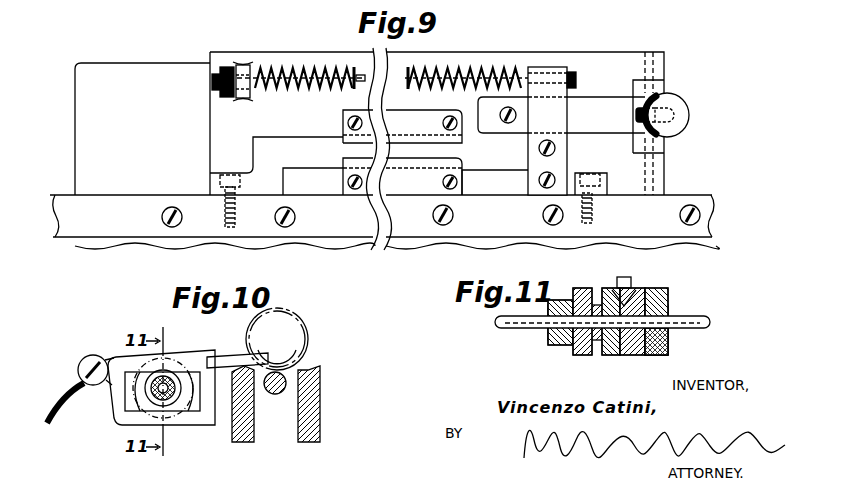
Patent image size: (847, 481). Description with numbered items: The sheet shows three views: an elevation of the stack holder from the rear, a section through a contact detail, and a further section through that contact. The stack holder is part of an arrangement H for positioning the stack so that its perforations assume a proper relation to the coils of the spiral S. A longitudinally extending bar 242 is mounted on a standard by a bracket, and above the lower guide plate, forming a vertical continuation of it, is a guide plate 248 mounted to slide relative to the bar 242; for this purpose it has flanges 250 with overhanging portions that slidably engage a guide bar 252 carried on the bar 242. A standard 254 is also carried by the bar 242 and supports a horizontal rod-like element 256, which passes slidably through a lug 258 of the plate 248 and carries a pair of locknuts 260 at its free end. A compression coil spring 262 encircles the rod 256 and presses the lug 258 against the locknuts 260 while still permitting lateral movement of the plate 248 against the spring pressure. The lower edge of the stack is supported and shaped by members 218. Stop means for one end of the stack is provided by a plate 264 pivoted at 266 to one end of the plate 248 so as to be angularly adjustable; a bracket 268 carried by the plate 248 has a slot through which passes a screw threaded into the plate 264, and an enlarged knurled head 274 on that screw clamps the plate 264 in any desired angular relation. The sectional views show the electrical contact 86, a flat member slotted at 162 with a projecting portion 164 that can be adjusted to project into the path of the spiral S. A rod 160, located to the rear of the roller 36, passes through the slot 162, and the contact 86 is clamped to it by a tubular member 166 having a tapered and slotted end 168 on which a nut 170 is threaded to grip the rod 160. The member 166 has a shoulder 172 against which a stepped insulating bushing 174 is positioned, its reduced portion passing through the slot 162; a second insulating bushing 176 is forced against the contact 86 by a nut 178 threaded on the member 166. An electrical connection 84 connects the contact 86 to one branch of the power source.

In FIG. 9, the arrangement H is at (101, 46).
In FIG. 9, the bar 242 is at (85, 225).
In FIG. 9, the guide plate 248 is at (352, 53).
In FIG. 9, the flanges 250 is at (343, 115).
In FIG. 9, the guide bar 252 is at (268, 148).
In FIG. 9, the standard 254 is at (532, 142).
In FIG. 9, the rod-like element 256 is at (300, 68).
In FIG. 9, the lug 258 is at (243, 66).
In FIG. 9, the locknuts 260 is at (220, 91).
In FIG. 9, the compression coil spring 262 is at (356, 70).
In FIG. 9, the plate 264 is at (666, 88).
In FIG. 9, the pivot 266 is at (666, 56).
In FIG. 9, the bracket 268 is at (603, 110).
In FIG. 9, the knurled head 274 is at (690, 117).
In FIG. 10, the spiral S is at (306, 331).
In FIG. 10, the members 218 is at (303, 368).
In FIG. 10, the roller 36 is at (273, 394).
In FIG. 10, the projecting portion 164 is at (250, 358).
In FIG. 10, the electrical contact 86 is at (196, 427).
In FIG. 11, the electrical contact 86 is at (630, 277).
In FIG. 10, the rod 160 is at (168, 378).
In FIG. 11, the rod 160 is at (510, 325).
In FIG. 10, the slot 162 is at (123, 404).
In FIG. 10, the electrical connection 84 is at (57, 390).
In FIG. 11, the tubular member 166 is at (663, 312).
In FIG. 11, the tapered and slotted end 168 is at (548, 337).
In FIG. 11, the nut 170 is at (562, 302).
In FIG. 11, the shoulder 172 is at (610, 350).
In FIG. 11, the stepped insulating bushing 174 is at (613, 350).
In FIG. 11, the second insulating bushing 176 is at (655, 354).
In FIG. 11, the nut 178 is at (663, 340).